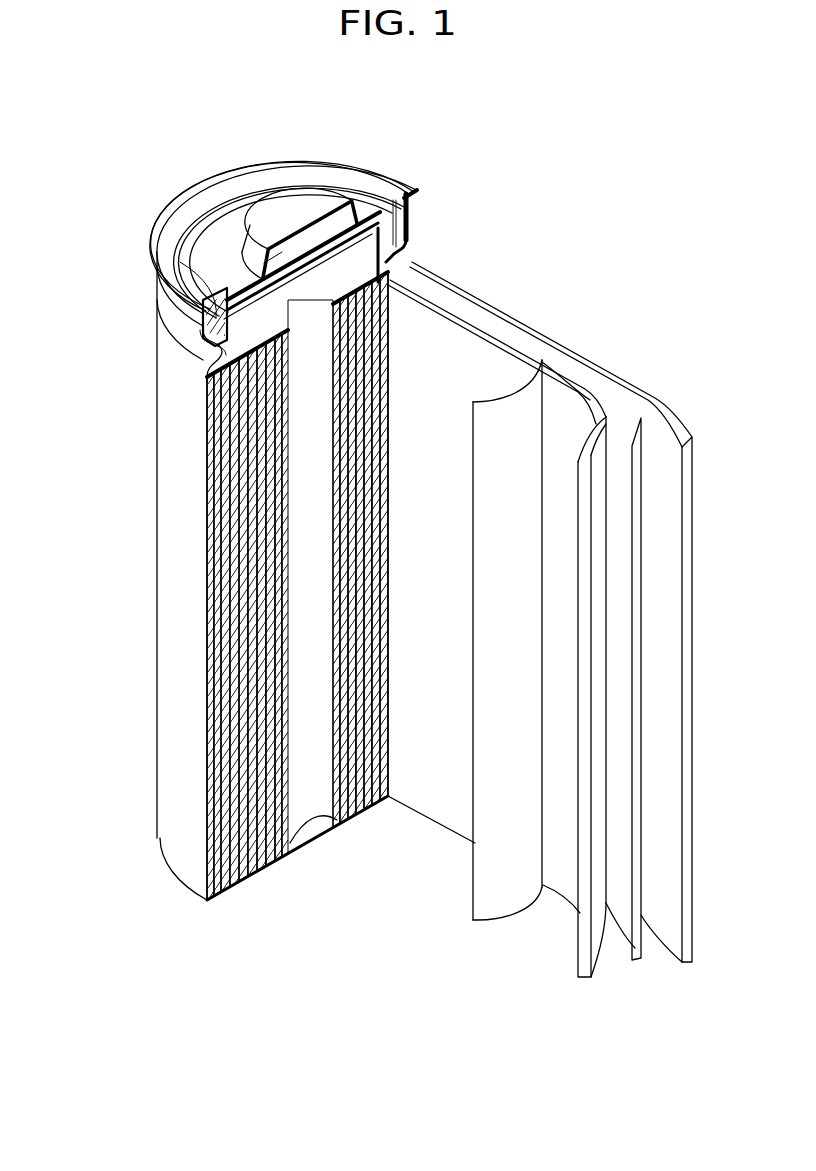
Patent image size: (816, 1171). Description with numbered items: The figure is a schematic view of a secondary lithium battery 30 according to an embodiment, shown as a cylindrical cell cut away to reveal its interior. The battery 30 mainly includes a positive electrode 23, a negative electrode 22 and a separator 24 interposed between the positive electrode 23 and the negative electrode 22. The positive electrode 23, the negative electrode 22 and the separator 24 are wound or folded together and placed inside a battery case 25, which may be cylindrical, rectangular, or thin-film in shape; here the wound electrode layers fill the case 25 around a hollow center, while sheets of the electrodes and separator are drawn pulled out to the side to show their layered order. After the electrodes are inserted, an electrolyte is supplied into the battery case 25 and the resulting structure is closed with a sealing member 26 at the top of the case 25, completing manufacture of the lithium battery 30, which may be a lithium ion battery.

The negative electrode 22 is at (663, 412).
The positive electrode 23 is at (592, 410).
The separator 24 is at (507, 903).
The battery case 25 is at (165, 578).
The sealing member 26 is at (278, 210).
The secondary lithium battery 30 is at (349, 127).